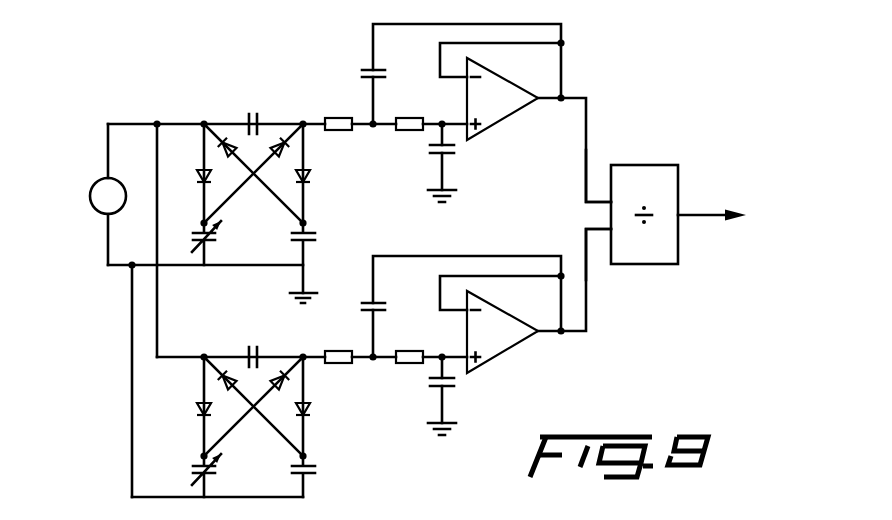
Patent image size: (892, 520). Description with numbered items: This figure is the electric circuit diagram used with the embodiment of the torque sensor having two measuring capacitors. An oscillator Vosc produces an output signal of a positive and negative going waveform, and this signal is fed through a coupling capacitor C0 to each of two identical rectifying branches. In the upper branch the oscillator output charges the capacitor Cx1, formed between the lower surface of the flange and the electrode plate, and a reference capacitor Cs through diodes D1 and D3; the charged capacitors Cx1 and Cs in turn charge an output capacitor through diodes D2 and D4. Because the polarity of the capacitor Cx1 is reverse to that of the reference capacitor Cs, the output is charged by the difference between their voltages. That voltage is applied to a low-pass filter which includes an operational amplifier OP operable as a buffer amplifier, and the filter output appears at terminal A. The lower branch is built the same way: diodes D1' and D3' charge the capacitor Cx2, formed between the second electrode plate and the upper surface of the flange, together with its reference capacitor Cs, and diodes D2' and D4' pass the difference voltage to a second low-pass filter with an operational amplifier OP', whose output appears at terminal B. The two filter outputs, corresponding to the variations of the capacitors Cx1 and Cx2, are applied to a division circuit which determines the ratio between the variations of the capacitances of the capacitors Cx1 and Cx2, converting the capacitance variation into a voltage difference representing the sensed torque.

The oscillator Vosc is at (87, 196).
The coupling capacitor C0 is at (253, 228).
The diode D1 is at (194, 173).
The diode D2 is at (253, 173).
The diode D3 is at (253, 173).
The diode D4 is at (313, 173).
The capacitor Cx1 is at (190, 243).
The reference capacitor Cs is at (312, 360).
The operational amplifier OP is at (502, 99).
The diode D1' is at (193, 406).
The diode D2' is at (253, 406).
The diode D3' is at (253, 406).
The diode D4' is at (315, 406).
The capacitor Cx2 is at (190, 475).
The operational amplifier OP' is at (502, 332).
The divider input A is at (587, 177).
The divider input B is at (588, 254).